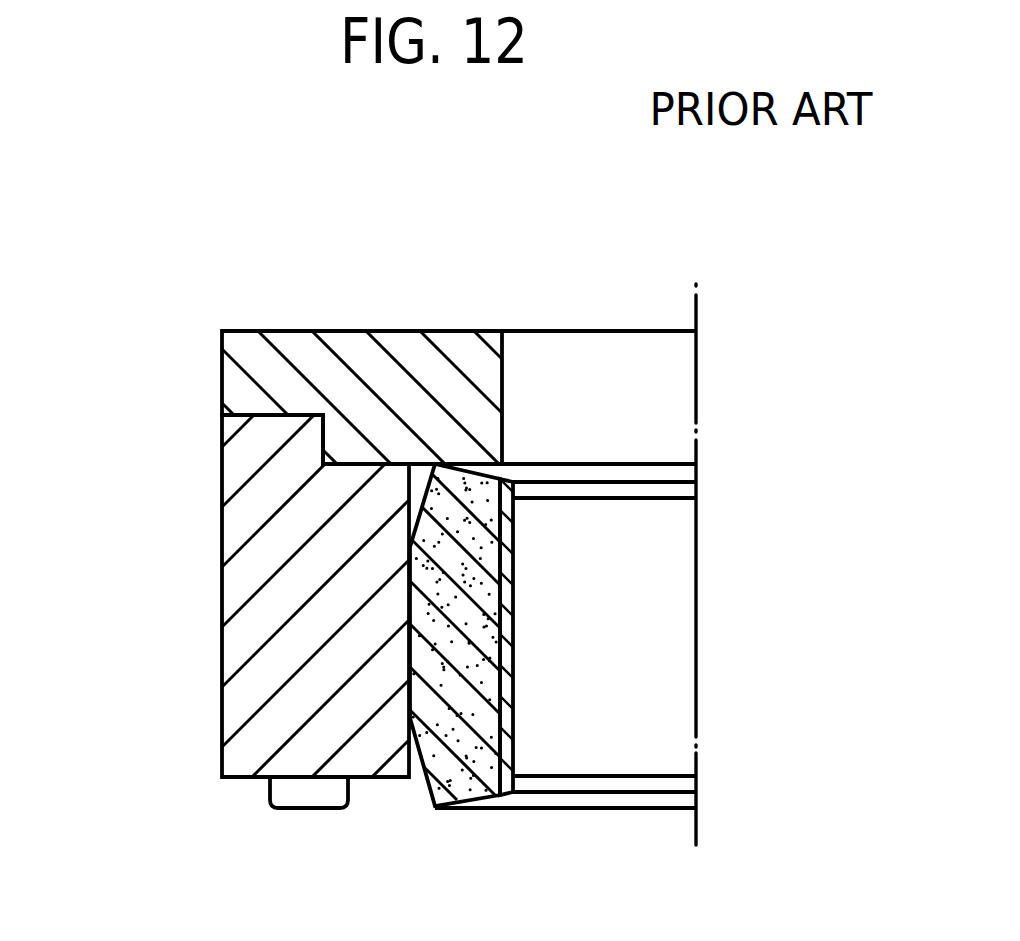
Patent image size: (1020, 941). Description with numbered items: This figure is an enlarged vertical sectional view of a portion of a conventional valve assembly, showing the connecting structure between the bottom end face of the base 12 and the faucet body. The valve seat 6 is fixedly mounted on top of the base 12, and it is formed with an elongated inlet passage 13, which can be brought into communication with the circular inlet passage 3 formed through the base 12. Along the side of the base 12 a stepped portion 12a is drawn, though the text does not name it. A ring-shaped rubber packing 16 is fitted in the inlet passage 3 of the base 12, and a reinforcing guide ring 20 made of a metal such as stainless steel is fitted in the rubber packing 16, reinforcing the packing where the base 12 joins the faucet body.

The valve seat 6 is at (367, 360).
The base 12 is at (262, 672).
The step portion of housing 12a is at (250, 432).
The inlet passage 13 is at (662, 398).
The inlet passage 3 is at (655, 677).
The rubber packing 16 is at (468, 755).
The reinforcing guide ring 20 is at (515, 695).